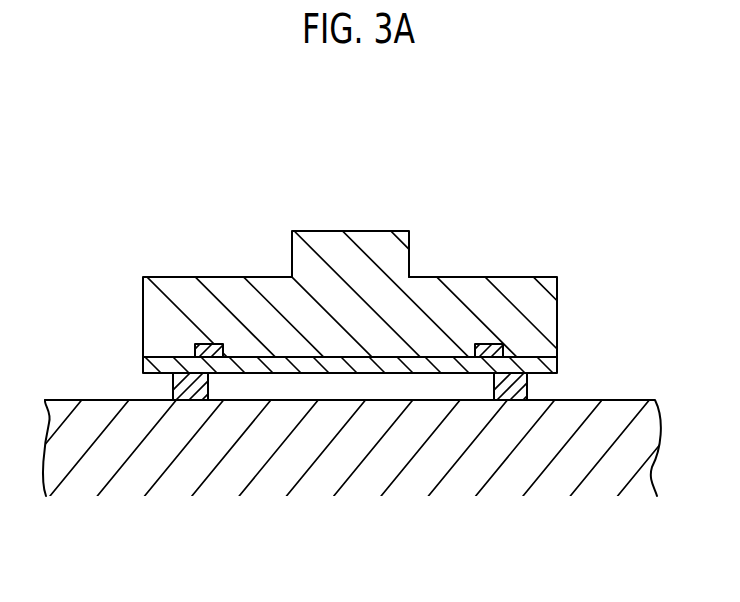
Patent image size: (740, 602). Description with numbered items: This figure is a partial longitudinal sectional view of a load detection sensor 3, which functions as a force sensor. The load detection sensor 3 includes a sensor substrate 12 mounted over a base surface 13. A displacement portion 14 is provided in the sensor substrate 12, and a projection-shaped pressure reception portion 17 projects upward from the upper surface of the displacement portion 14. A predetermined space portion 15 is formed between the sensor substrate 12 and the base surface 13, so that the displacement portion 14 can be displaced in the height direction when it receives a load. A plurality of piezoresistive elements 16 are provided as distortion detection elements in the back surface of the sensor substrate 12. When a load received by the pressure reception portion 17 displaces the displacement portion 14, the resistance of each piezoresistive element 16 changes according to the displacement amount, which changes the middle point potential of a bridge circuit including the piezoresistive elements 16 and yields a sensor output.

The load detection sensor 3 is at (445, 162).
The sensor substrate 12 is at (543, 316).
The base surface 13 is at (596, 413).
The displacement portion 14 is at (360, 310).
The space portion 15 is at (354, 387).
The piezoresistive elements 16 is at (209, 343).
The pressure reception portion 17 is at (352, 256).